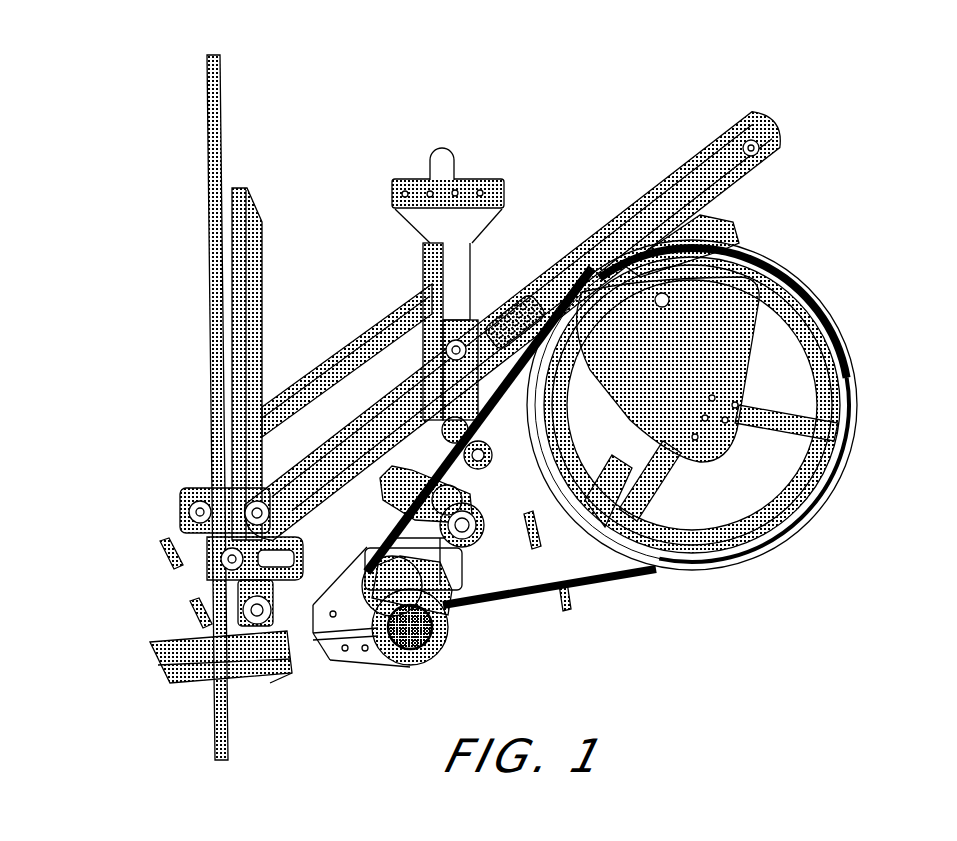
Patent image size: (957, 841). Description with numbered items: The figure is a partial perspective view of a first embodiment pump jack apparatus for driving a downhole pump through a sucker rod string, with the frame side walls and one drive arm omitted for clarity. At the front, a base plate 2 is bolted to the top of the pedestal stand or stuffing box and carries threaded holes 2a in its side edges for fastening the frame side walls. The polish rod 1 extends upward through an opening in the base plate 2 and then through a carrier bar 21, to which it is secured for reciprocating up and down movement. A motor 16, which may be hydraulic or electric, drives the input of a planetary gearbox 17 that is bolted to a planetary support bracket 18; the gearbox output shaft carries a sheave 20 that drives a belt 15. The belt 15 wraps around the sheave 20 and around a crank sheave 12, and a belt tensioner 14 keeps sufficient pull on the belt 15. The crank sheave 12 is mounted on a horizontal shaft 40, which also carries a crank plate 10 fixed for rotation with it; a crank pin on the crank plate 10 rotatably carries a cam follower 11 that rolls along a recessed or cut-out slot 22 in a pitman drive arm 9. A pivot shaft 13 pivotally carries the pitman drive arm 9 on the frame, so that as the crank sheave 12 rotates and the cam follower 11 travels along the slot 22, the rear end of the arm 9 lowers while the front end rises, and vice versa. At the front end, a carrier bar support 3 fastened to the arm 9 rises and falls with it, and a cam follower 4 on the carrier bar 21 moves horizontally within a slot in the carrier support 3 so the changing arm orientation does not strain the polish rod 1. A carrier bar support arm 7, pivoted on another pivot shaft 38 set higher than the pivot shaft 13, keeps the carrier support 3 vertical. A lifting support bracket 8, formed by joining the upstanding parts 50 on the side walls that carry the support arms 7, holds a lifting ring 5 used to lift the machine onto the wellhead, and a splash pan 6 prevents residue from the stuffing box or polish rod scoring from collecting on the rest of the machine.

The polish rod 1 is at (214, 718).
The base plate 2 is at (150, 648).
The threaded holes 2a is at (283, 674).
The carrier bar support 3 is at (207, 573).
The cam follower 4 is at (203, 550).
The lifting ring 5 is at (430, 153).
The splash pan 6 is at (262, 243).
The carrier bar support arm 7 is at (392, 327).
The lifting support bracket 8 is at (473, 253).
The pitman drive arm 9 is at (760, 150).
The crank plate 10 is at (737, 333).
The cam follower 11 is at (712, 298).
The crank sheave 12 is at (813, 290).
The pivot shaft 13 is at (492, 455).
The belt tensioner 14 is at (413, 523).
The belt 15 is at (607, 577).
The motor 16 is at (440, 632).
The planetary gearbox 17 is at (450, 577).
The planetary support bracket 18 is at (353, 655).
The sheave 20 is at (393, 553).
The carrier bar 21 is at (190, 505).
The slot 22 is at (707, 140).
The pivot shaft 38 is at (446, 352).
The shaft 40 is at (700, 455).
The upstanding parts 50 is at (480, 330).